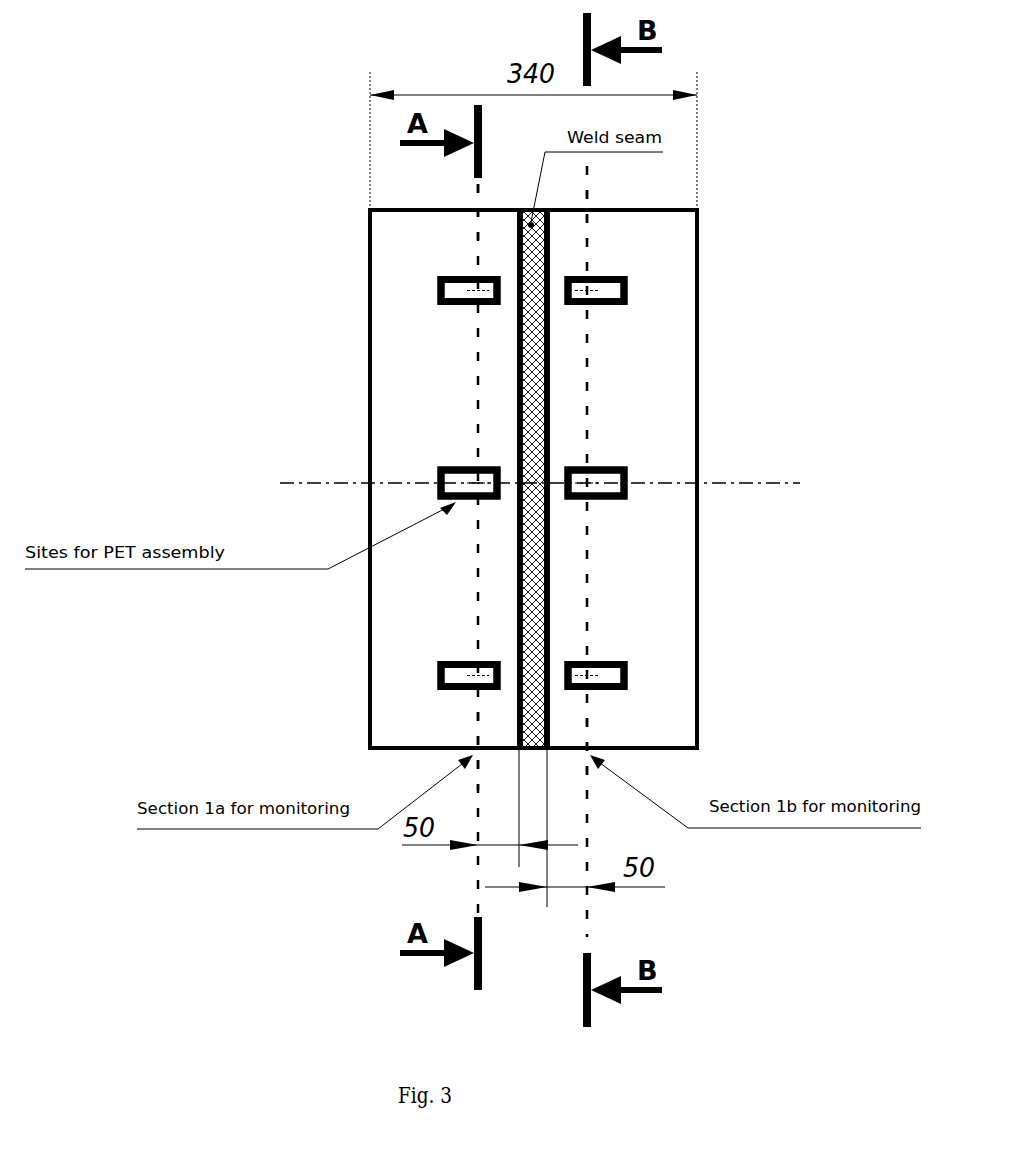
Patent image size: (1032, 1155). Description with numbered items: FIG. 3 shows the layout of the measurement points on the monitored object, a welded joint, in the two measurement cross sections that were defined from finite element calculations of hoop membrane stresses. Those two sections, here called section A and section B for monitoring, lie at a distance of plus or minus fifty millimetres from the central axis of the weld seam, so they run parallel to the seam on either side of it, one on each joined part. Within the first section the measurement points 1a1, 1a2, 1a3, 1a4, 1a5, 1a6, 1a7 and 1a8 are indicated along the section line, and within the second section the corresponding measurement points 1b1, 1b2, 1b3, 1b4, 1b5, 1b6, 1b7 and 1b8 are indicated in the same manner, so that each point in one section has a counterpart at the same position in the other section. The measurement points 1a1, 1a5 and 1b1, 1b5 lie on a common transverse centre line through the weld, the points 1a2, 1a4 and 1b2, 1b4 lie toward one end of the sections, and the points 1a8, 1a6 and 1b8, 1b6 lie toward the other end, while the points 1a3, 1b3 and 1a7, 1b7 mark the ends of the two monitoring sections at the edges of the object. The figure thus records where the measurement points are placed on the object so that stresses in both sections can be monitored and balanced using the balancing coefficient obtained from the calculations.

The site for PET assembly in section 1a (middle row) 1a1 is at (376, 478).
The site for PET assembly in section 1a (upper row) 1a2 is at (384, 290).
The upper end of monitoring section 1a 1a3 is at (452, 212).
The site for PET assembly in section 1a (upper row, alternate) 1a4 is at (402, 290).
The site for PET assembly in section 1a (middle row, alternate) 1a5 is at (394, 478).
The site for PET assembly in section 1a (lower row, alternate) 1a6 is at (402, 675).
The lower end of monitoring section 1a 1a7 is at (427, 751).
The site for PET assembly in section 1a (lower row) 1a8 is at (384, 675).
The site for PET assembly in section 1b (middle row) 1b1 is at (660, 476).
The site for PET assembly in section 1b (upper row) 1b2 is at (661, 290).
The upper end of monitoring section 1b 1b3 is at (610, 213).
The site for PET assembly in section 1b (upper row, alternate) 1b4 is at (686, 290).
The site for PET assembly in section 1b (middle row, alternate) 1b5 is at (686, 476).
The site for PET assembly in section 1b (lower row, alternate) 1b6 is at (684, 675).
The lower end of monitoring section 1b 1b7 is at (635, 754).
The site for PET assembly in section 1b (lower row) 1b8 is at (657, 675).